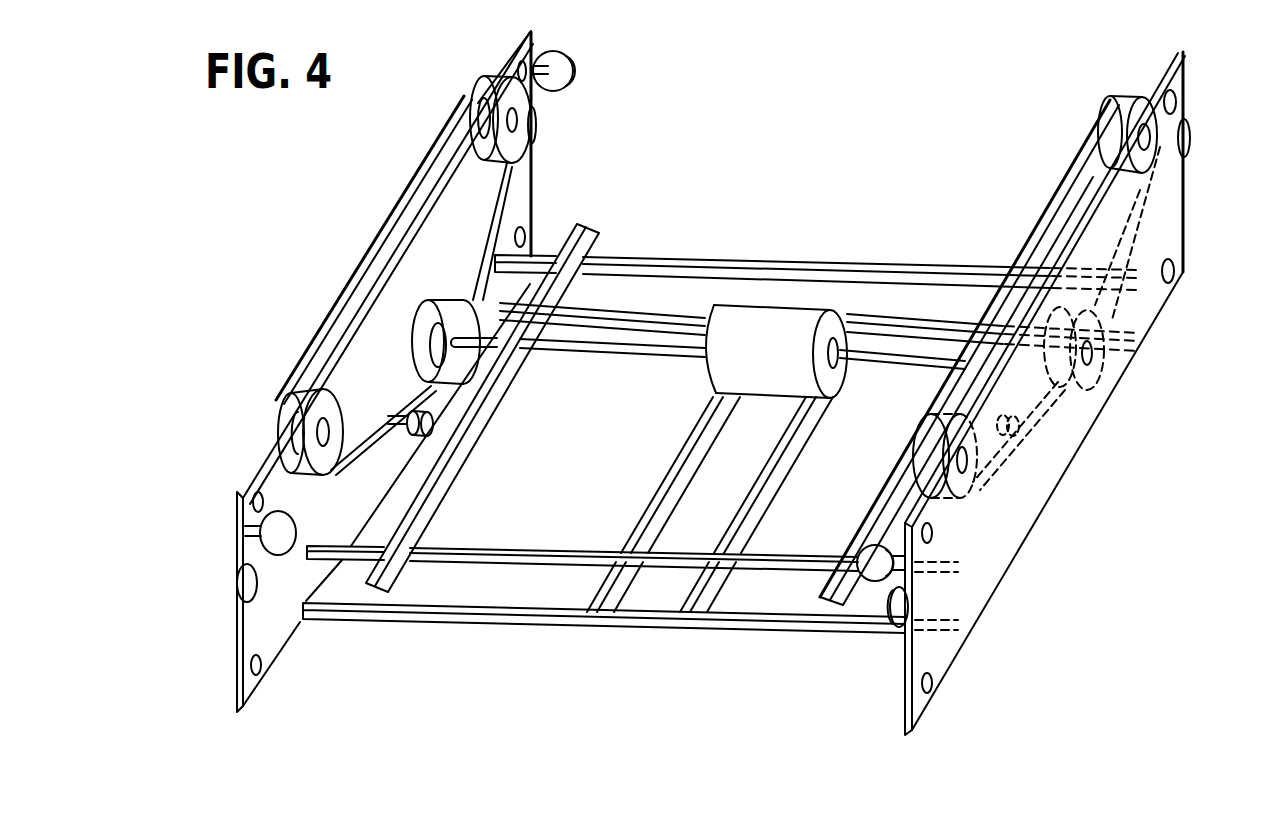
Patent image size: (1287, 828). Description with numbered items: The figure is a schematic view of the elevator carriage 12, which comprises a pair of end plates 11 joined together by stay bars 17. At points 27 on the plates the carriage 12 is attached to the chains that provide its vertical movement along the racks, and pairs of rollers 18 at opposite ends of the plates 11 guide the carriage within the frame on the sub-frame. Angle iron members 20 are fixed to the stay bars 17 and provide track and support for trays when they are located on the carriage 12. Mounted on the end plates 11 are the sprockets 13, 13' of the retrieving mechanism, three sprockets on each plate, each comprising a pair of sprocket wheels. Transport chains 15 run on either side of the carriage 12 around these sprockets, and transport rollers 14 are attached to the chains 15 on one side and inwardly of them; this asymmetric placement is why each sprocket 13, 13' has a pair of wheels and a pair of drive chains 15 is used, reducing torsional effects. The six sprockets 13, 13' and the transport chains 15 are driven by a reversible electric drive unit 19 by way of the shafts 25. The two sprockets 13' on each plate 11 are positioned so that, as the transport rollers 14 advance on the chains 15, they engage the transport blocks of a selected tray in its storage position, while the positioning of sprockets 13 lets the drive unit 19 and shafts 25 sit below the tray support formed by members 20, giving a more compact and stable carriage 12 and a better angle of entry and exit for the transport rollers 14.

The end plate 11 is at (711, 383).
The elevator carriage 12 is at (579, 660).
The sprocket 13 is at (782, 347).
The sprocket 13' is at (717, 292).
The transport roller 14 is at (410, 434).
The transport chain 15 is at (425, 165).
The stay bar 17 is at (643, 257).
The roller 18 is at (551, 91).
The reversible electric drive unit 19 is at (776, 351).
The angle iron member 20 is at (578, 218).
The shaft 25 is at (572, 345).
The attachment point 27 is at (1177, 101).